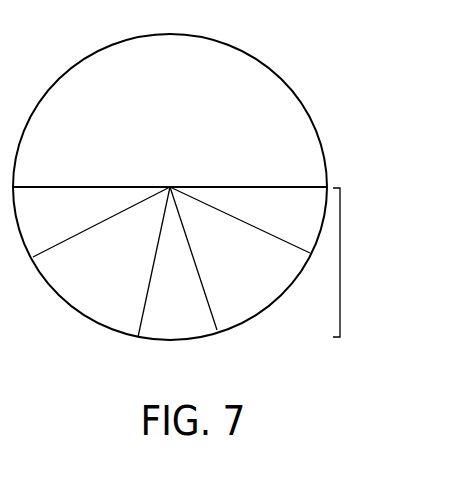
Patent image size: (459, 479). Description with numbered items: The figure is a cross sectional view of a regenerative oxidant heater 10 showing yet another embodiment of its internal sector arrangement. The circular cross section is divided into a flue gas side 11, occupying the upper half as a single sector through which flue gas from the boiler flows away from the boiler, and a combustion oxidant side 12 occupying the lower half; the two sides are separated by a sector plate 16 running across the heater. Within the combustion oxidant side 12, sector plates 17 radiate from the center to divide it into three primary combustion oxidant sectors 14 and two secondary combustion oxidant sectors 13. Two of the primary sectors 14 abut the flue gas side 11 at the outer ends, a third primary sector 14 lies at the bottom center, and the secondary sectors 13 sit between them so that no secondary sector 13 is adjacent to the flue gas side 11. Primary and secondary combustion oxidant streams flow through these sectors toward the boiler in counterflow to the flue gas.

The regenerative oxidant heater 10 is at (293, 88).
The flue gas side 11 is at (166, 104).
The combustion oxidant side 12 is at (342, 253).
The secondary combustion oxidant sector 13 is at (180, 262).
The primary combustion oxidant sector 14 is at (171, 253).
The sector plate 16 is at (118, 187).
The sector plate 17 is at (112, 218).